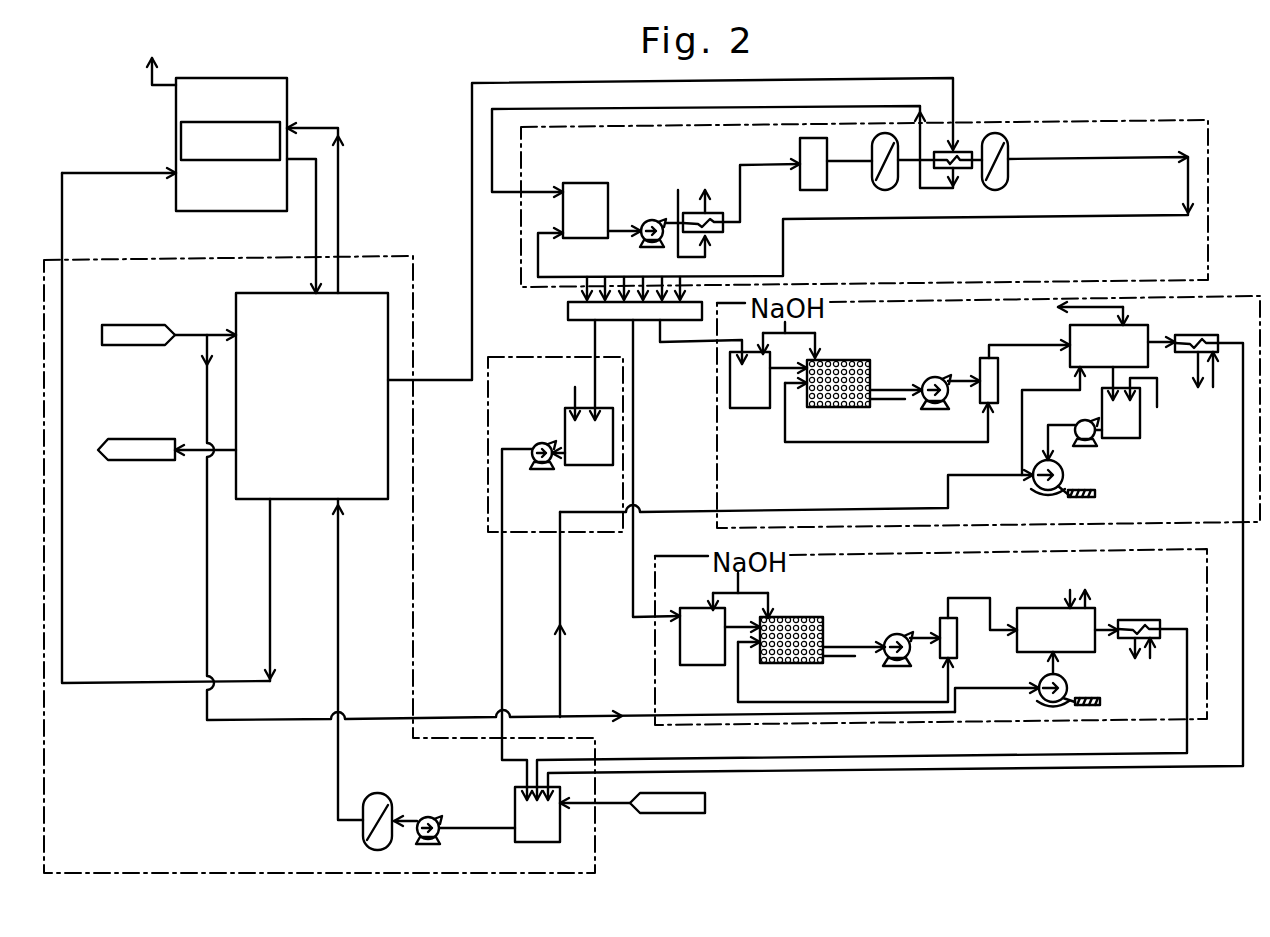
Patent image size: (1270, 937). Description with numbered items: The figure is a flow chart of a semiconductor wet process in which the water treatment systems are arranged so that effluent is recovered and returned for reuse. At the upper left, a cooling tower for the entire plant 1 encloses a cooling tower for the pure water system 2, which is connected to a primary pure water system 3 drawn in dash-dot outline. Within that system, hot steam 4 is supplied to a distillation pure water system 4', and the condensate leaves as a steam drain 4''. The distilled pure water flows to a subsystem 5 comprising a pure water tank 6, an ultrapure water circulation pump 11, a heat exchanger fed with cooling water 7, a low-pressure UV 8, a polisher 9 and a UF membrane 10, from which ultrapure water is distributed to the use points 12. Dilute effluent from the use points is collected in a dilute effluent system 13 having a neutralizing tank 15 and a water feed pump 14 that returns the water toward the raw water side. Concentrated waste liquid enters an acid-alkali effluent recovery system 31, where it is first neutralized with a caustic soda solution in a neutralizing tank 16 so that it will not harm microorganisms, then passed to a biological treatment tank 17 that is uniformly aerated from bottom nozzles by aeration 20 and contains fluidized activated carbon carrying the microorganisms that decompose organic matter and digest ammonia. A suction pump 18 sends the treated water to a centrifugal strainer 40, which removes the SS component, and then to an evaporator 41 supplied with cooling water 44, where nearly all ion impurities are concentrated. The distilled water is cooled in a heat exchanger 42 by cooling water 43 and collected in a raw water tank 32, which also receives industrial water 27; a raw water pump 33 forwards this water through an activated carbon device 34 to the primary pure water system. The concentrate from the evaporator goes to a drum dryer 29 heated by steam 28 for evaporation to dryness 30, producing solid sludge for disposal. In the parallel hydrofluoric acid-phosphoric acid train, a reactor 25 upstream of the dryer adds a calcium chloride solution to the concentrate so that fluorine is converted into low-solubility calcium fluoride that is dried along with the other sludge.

The cooling tower for entire plant 1 is at (278, 96).
The cooling tower for pure water system 2 is at (190, 140).
The primary pure water system 3 is at (175, 258).
The hot steam 4 is at (169, 313).
The distillation pure water system 4' is at (309, 428).
The steam drain 4'' is at (167, 432).
The subsystem 5 is at (1096, 120).
The pure water tank 6 is at (583, 190).
The cooling water 7 is at (680, 197).
The low-pressure UV 8 is at (800, 178).
The polisher 9 is at (878, 184).
The UF membrane 10 is at (1006, 175).
The ultrapure water circulation pump 11 is at (651, 220).
The use points 12 is at (570, 312).
The dilute effluent system 13 is at (547, 355).
The water feed pump 14 is at (544, 443).
The neutralizing tank 15 is at (585, 456).
The neutralizing tank 16 is at (750, 398).
The biological treatment tank 17 is at (818, 405).
The suction pump 18 is at (930, 378).
The aeration 20 is at (895, 399).
The reactor 25 is at (1122, 438).
The industrial water 27 is at (664, 811).
The steam 28 is at (1010, 476).
The drum dryer 29 is at (1043, 491).
The evaporation to dryness 30 is at (1095, 494).
The acid-alkali effluent recovery system 31 is at (699, 554).
The raw water tank 32 is at (522, 836).
The raw water pump 33 is at (432, 816).
The activated carbon device 34 is at (366, 846).
The centrifugal strainer 40 is at (981, 364).
The evaporator 41 is at (1148, 331).
The heat exchanger 42 is at (1213, 336).
The cooling water 43 is at (1217, 372).
The cooling water 44 is at (1062, 306).